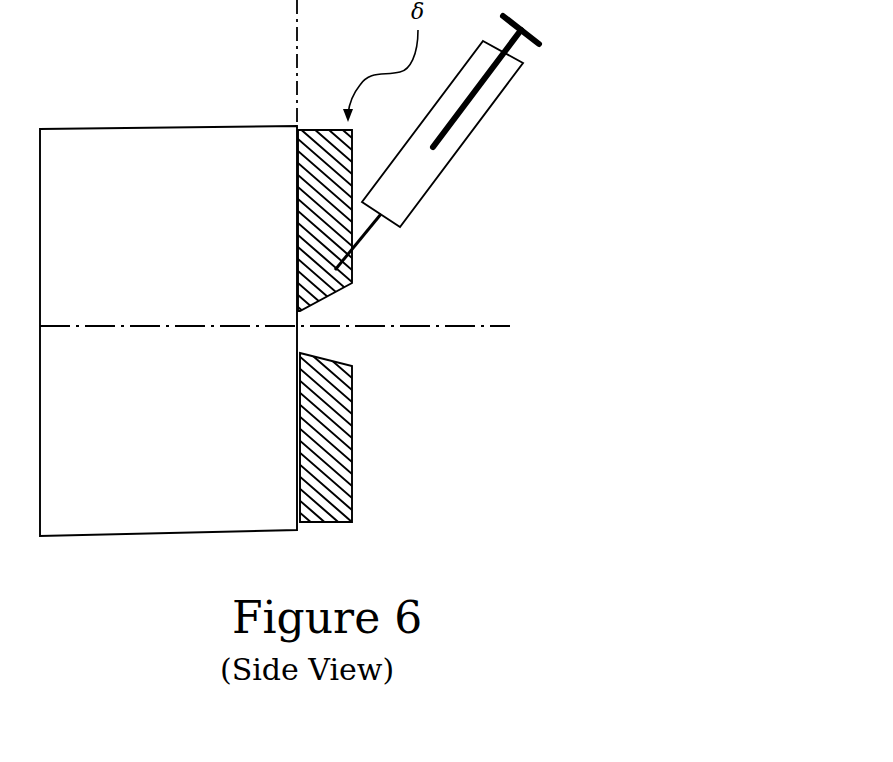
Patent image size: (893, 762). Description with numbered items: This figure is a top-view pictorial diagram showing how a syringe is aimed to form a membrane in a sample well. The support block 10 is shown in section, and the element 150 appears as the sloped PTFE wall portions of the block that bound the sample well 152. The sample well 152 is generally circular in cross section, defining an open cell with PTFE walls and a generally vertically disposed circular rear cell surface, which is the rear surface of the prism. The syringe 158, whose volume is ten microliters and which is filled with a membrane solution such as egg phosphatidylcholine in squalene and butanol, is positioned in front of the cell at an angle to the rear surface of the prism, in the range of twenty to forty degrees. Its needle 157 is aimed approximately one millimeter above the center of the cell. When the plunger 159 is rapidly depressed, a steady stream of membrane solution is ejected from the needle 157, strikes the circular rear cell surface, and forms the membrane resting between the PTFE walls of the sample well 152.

The substrate body 10 is at (105, 537).
The sealing material layer 150 is at (355, 465).
The sample well 152 is at (338, 348).
The needle 157 is at (360, 245).
The syringe 158 is at (430, 188).
The plunger 159 is at (544, 47).